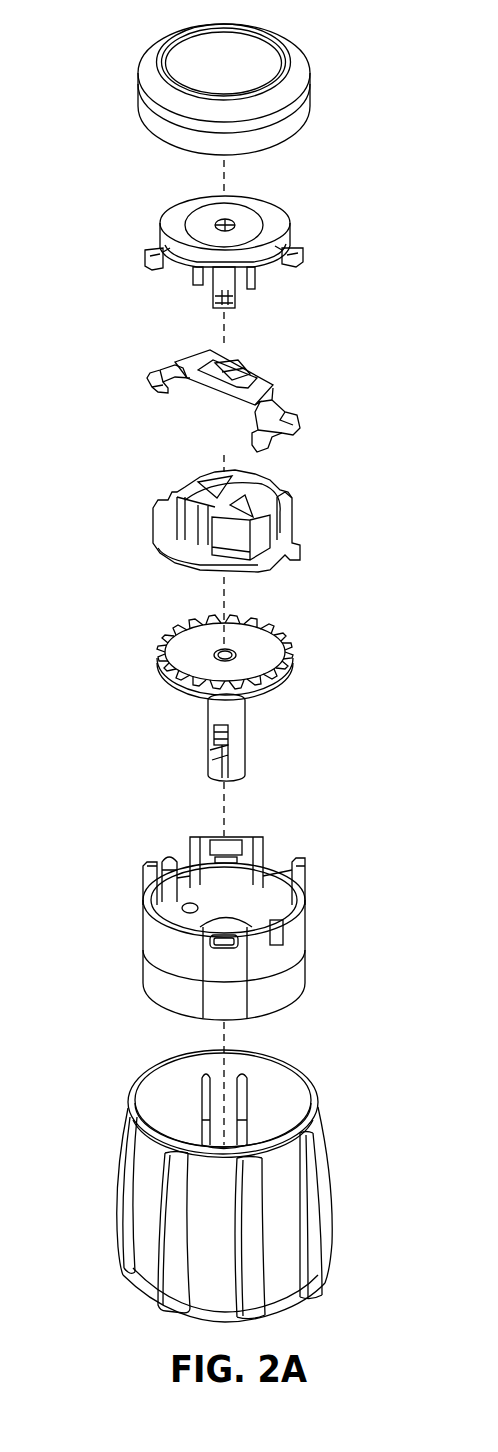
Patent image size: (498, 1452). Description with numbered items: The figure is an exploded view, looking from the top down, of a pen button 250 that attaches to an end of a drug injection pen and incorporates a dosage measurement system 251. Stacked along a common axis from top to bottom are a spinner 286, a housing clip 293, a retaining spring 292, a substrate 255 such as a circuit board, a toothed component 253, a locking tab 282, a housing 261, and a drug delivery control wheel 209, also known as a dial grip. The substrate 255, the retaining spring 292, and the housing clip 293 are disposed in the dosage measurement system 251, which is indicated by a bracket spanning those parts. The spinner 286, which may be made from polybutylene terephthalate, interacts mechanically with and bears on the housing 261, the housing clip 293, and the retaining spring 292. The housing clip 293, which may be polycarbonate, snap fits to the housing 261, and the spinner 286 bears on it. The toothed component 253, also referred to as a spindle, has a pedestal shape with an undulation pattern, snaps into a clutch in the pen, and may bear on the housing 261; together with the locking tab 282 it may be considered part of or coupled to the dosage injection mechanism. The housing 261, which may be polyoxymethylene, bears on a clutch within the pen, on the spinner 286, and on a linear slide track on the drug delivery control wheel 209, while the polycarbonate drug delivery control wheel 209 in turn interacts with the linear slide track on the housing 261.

The drug delivery control wheel 209 is at (318, 1158).
The pen button 250 is at (97, 32).
The dosage measurement system 251 is at (340, 174).
The toothed component 253 is at (273, 685).
The substrate 255 is at (267, 555).
The housing 261 is at (293, 963).
The locking tab 282 is at (212, 738).
The spinner 286 is at (292, 88).
The retaining spring 292 is at (218, 394).
The housing clip 293 is at (260, 272).